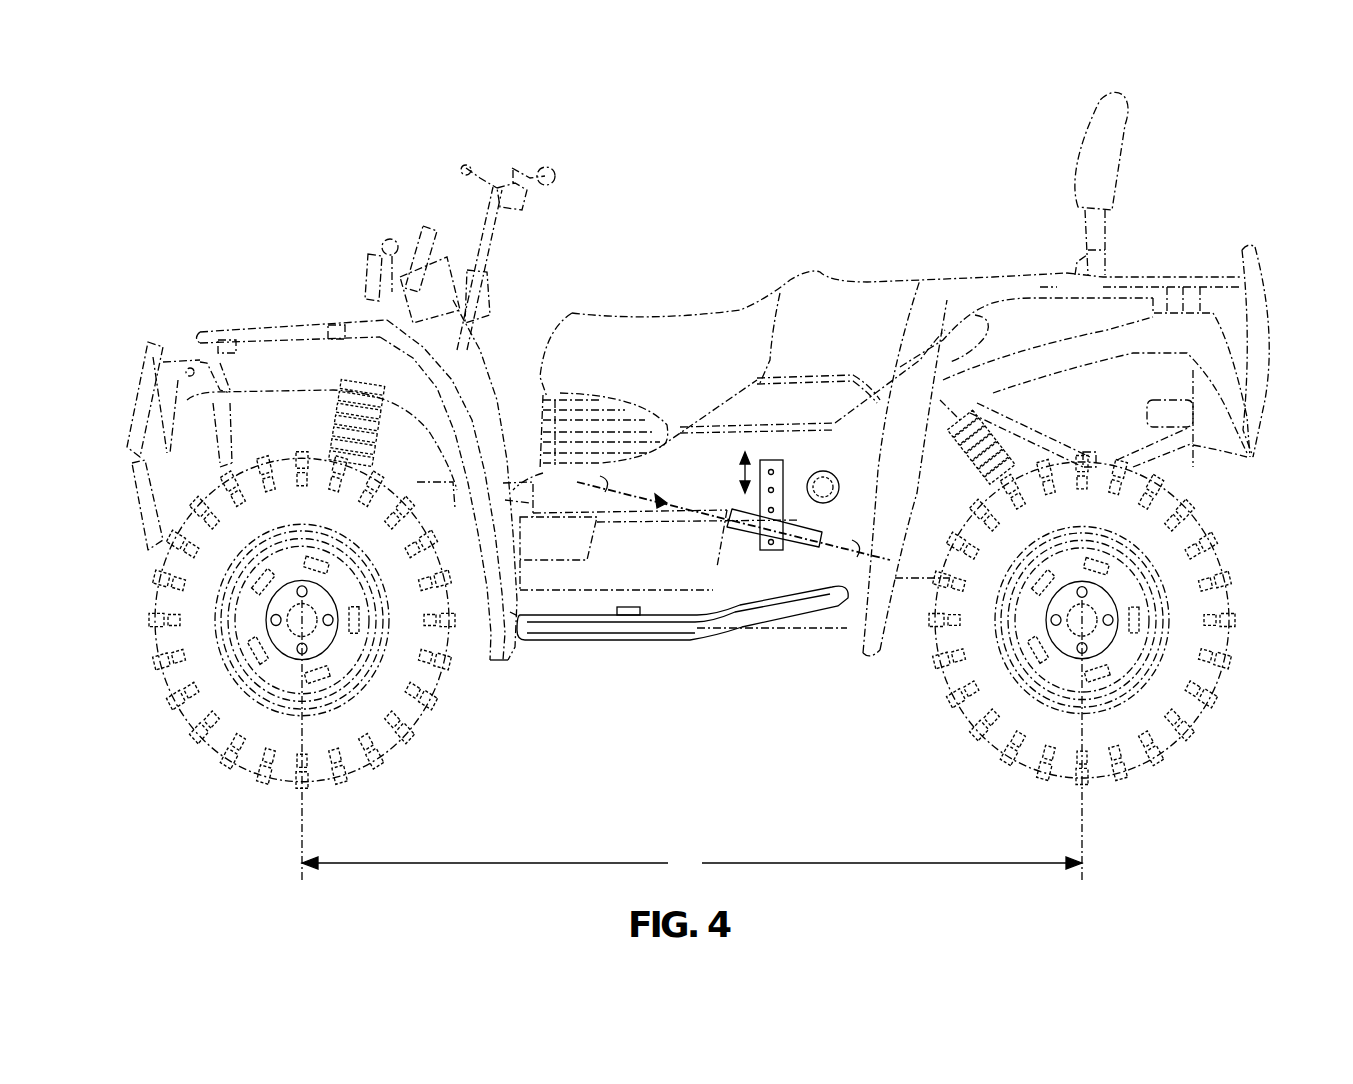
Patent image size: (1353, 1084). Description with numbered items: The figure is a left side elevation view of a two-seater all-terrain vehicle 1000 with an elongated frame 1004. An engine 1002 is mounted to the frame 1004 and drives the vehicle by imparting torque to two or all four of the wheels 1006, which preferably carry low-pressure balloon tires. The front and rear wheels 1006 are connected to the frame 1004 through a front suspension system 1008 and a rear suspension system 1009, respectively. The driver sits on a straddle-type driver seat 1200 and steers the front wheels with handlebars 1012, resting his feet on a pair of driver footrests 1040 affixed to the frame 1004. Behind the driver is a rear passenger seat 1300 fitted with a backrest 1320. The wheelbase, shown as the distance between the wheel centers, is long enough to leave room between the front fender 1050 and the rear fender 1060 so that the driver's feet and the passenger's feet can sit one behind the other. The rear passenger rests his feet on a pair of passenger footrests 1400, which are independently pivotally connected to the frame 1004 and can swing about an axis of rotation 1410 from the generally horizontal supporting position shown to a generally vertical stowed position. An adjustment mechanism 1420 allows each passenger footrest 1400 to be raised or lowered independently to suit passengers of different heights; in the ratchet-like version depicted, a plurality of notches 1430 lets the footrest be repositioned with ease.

The all-terrain vehicle 1000 is at (790, 145).
The engine 1002 is at (537, 420).
The frame 1004 is at (1193, 445).
The wheels 1006 is at (238, 765).
The front suspension system 1008 is at (347, 413).
The rear suspension system 1009 is at (975, 483).
The handlebars 1012 is at (513, 170).
The driver footrests 1040 is at (582, 627).
The front fender 1050 is at (490, 660).
The rear fender 1060 is at (876, 650).
The driver seat 1200 is at (672, 318).
The rear passenger seat 1300 is at (1005, 265).
The backrest 1320 is at (1118, 152).
The passenger footrests 1400 is at (800, 545).
The axis of rotation 1410 is at (633, 490).
The adjustment mechanism 1420 is at (765, 460).
The notches 1430 is at (790, 462).